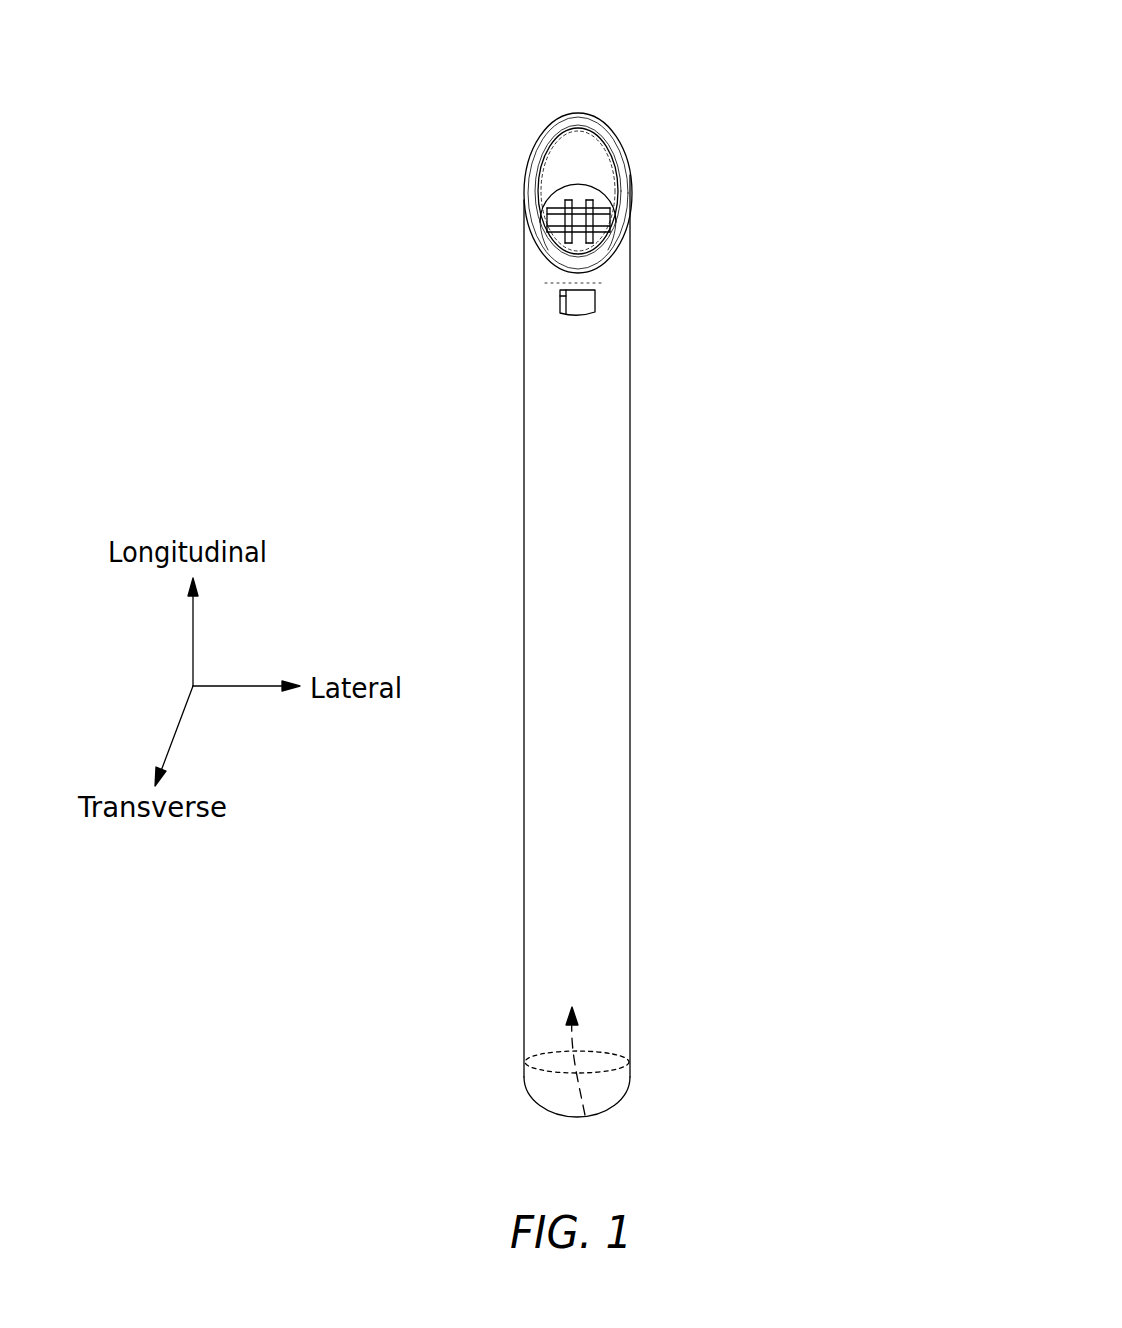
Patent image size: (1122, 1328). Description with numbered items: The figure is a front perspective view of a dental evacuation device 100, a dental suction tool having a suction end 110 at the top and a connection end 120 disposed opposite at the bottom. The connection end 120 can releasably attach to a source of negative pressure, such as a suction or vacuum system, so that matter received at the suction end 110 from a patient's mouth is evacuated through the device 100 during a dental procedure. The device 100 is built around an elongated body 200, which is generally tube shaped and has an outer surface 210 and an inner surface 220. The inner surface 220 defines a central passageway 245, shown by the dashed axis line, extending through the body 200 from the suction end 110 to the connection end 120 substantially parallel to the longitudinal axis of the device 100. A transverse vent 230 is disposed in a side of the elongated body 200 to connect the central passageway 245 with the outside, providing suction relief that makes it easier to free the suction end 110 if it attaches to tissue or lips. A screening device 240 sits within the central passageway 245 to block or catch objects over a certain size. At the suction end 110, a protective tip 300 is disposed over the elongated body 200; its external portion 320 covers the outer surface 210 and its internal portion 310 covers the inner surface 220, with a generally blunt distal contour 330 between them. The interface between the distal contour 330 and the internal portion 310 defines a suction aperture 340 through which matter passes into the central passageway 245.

The dental evacuation device 100 is at (771, 93).
The suction end 110 is at (469, 118).
The connection end 120 is at (648, 1085).
The elongated body 200 is at (650, 620).
The outer surface 210 is at (540, 430).
The inner surface 220 is at (577, 310).
The vent 230 is at (605, 297).
The screening device 240 is at (563, 218).
The central passageway 245 is at (585, 1117).
The protective tip 300 is at (643, 177).
The internal portion 310 is at (563, 156).
The external portion 320 is at (525, 252).
The distal contour 330 is at (630, 218).
The suction aperture 340 is at (592, 160).